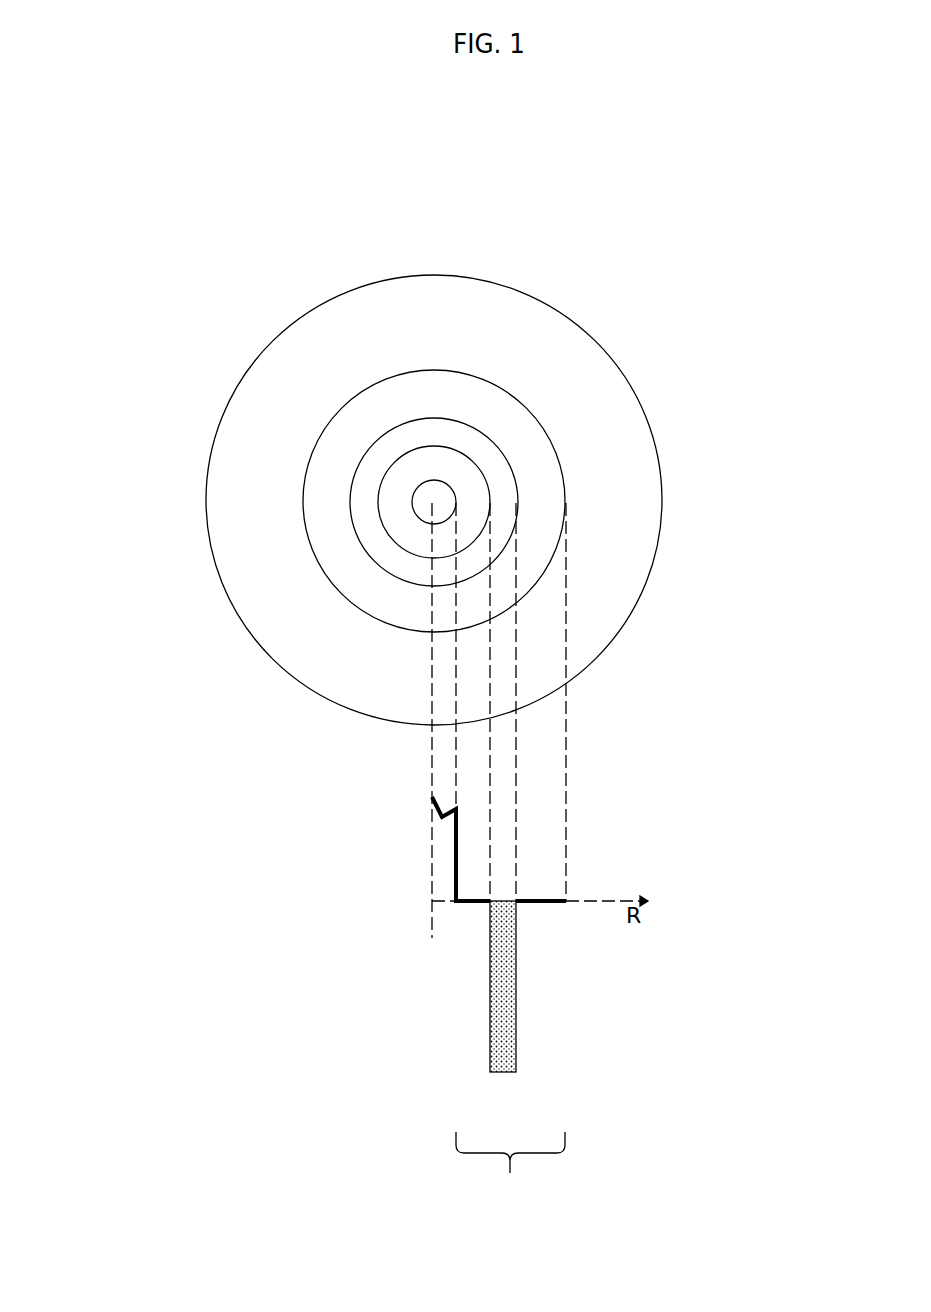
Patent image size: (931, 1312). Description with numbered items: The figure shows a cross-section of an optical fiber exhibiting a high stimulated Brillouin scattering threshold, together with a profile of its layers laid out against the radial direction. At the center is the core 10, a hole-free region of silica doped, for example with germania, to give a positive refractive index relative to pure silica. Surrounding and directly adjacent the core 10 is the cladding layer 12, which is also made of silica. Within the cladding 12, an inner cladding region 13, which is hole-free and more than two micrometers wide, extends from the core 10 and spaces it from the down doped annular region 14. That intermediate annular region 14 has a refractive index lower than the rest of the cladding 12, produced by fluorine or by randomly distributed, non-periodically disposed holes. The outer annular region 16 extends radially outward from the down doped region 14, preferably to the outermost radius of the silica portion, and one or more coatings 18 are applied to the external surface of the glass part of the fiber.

The core 10 is at (420, 503).
The cladding layer 12 is at (510, 1171).
The inner cladding region 13 is at (390, 499).
The down doped annular region 14 is at (368, 480).
The outer annular region 16 is at (338, 447).
The coating 18 is at (597, 512).